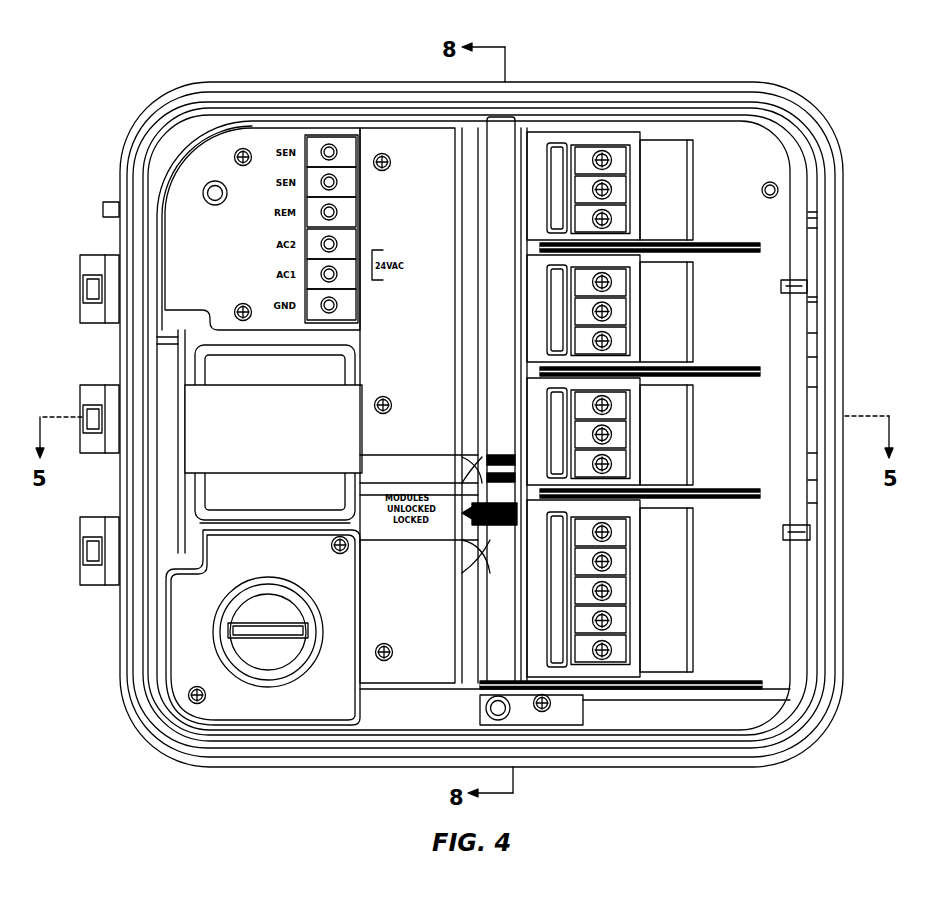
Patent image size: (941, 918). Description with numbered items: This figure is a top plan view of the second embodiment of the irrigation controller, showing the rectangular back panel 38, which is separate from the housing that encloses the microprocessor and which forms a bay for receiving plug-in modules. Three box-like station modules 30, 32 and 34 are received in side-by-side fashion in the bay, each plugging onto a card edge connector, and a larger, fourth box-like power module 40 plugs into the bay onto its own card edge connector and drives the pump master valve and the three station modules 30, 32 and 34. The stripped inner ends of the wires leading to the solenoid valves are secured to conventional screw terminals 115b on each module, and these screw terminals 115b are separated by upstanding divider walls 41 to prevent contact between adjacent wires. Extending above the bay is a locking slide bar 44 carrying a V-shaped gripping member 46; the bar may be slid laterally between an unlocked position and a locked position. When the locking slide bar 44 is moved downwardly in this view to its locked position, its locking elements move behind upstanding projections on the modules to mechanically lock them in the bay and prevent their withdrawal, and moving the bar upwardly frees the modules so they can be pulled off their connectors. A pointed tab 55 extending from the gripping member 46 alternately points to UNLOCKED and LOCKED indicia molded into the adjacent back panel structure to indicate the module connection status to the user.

The back panel 38 is at (689, 770).
The upstanding divider walls 41 is at (630, 133).
The locking slide bar 44 is at (500, 213).
The station module 34 is at (620, 212).
The station module 32 is at (620, 290).
The station module 30 is at (620, 428).
The power module 40 is at (618, 585).
The screw terminals 115b is at (617, 185).
The pointed tab 55 is at (467, 560).
The gripping member 46 is at (490, 537).